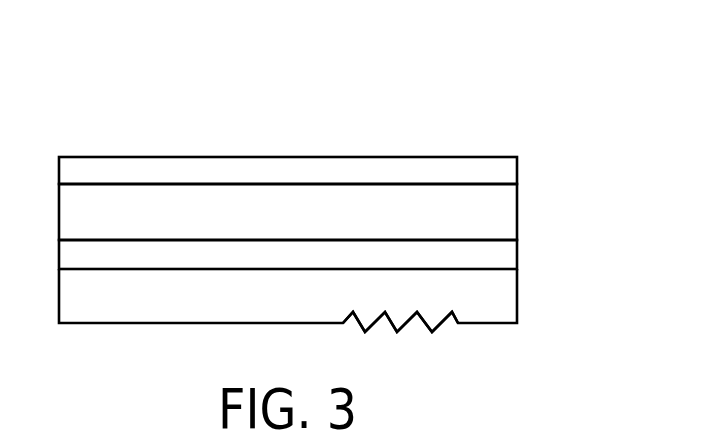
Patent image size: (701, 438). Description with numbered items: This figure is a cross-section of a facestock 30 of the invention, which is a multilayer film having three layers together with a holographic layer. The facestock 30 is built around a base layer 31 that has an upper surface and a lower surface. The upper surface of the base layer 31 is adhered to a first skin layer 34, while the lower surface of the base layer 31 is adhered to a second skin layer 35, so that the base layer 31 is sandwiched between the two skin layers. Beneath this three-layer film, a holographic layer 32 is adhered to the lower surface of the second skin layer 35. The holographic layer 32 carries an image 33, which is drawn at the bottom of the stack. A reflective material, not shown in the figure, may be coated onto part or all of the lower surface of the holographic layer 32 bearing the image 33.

The facestock 30 is at (326, 220).
The base layer 31 is at (503, 213).
The holographic layer 32 is at (492, 297).
The image 33 is at (422, 338).
The first skin layer 34 is at (503, 172).
The second skin layer 35 is at (503, 256).